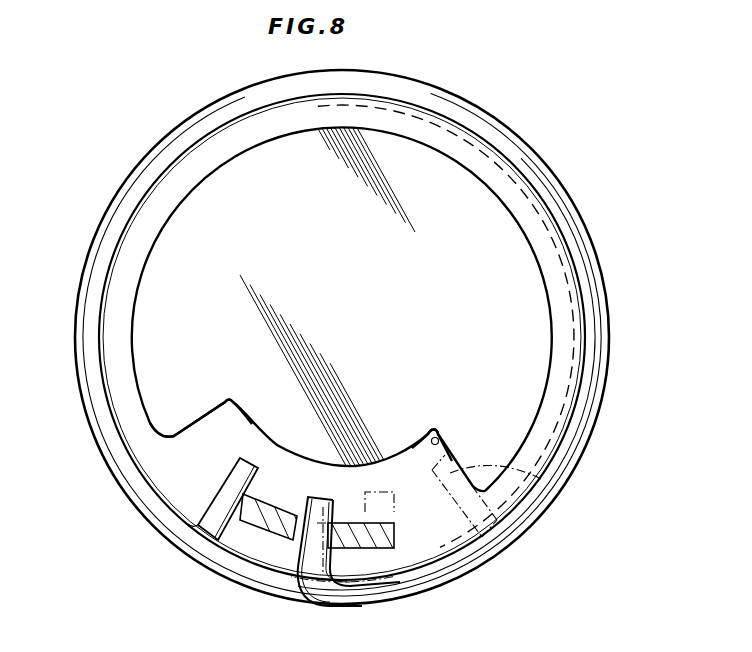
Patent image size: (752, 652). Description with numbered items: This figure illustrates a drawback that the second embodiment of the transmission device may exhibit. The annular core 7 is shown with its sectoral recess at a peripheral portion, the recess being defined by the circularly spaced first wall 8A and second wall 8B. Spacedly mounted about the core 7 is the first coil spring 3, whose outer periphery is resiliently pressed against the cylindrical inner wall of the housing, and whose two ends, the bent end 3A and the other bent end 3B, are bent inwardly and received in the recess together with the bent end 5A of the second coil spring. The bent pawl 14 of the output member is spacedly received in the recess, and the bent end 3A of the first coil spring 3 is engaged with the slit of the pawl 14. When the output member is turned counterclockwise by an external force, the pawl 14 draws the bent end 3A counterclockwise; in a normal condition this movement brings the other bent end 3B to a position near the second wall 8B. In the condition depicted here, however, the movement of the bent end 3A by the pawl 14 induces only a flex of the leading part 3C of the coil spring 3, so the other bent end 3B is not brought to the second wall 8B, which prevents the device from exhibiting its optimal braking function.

The first coil spring 3 is at (362, 603).
The bent end of first coil spring 3A is at (293, 566).
The other bent end of first coil spring 3B is at (238, 473).
The leading part of coil 3C is at (555, 270).
The bent end of second coil spring 5A is at (548, 472).
The annular core 7 is at (398, 311).
The first wall 8A is at (433, 433).
The second wall 8B is at (188, 433).
The bent pawl 14 is at (260, 522).